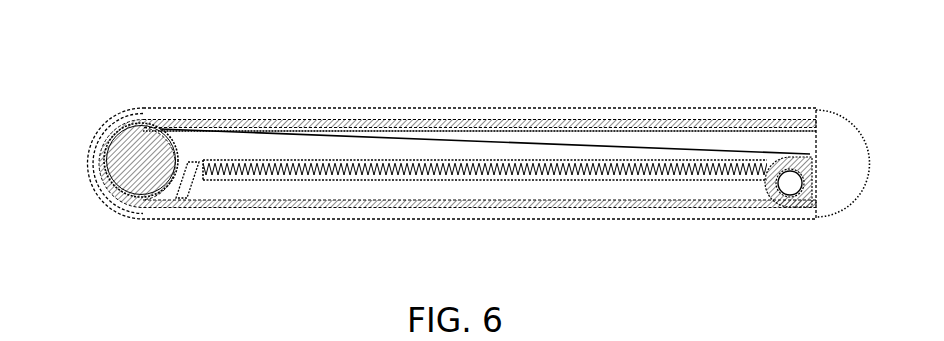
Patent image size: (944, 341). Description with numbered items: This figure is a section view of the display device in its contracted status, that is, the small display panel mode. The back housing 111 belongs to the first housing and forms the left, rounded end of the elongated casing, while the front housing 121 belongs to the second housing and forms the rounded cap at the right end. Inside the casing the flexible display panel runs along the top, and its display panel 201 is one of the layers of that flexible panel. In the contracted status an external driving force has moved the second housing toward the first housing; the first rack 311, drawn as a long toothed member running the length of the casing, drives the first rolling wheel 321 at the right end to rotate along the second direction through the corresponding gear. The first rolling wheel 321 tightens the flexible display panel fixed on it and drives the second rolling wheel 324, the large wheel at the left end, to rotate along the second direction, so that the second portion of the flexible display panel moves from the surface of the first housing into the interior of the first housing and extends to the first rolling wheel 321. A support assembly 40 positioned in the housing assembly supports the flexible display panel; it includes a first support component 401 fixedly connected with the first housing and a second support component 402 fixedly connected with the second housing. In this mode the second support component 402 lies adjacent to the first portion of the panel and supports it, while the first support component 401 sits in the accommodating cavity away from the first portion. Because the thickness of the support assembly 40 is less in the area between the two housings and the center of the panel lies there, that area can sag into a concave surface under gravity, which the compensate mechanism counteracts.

The back housing 111 is at (97, 134).
The front housing 121 is at (843, 190).
The display panel 201 is at (163, 135).
The second rolling wheel 324 is at (133, 178).
The support assembly 40 is at (488, 85).
The first support component 401 is at (385, 152).
The second support component 402 is at (392, 41).
The first rack 311 is at (331, 170).
The first rolling wheel 321 is at (790, 186).